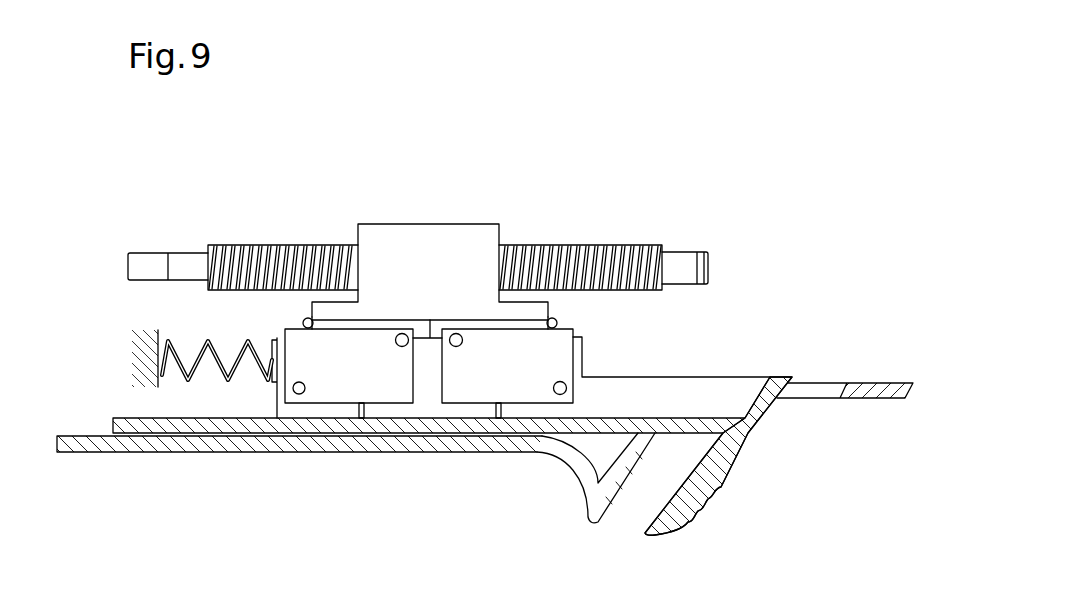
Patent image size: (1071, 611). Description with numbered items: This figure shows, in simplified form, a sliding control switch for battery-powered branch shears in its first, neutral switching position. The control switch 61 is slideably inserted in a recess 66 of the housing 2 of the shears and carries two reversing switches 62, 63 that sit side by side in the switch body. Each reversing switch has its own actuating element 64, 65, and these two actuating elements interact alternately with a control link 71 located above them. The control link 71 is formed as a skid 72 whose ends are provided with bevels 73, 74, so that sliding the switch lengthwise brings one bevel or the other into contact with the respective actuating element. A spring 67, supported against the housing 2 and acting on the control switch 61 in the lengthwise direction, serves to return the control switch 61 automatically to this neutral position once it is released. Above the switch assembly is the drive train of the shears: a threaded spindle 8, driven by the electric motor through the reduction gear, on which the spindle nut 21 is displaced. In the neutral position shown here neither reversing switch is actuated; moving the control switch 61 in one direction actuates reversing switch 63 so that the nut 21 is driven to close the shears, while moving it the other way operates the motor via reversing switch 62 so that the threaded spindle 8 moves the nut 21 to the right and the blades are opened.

The housing 2 is at (166, 386).
The threaded spindle 8 is at (264, 243).
The spindle nut 21 is at (428, 222).
The control switch 61 is at (765, 433).
The reversing switch 62 is at (402, 388).
The reversing switch 63 is at (500, 388).
The actuating element 64 is at (302, 320).
The actuating element 65 is at (558, 320).
The recess 66 is at (817, 392).
The spring 67 is at (233, 383).
The control link 71 is at (430, 324).
The skid 72 is at (356, 326).
The bevel 73 is at (312, 326).
The bevel 74 is at (544, 324).